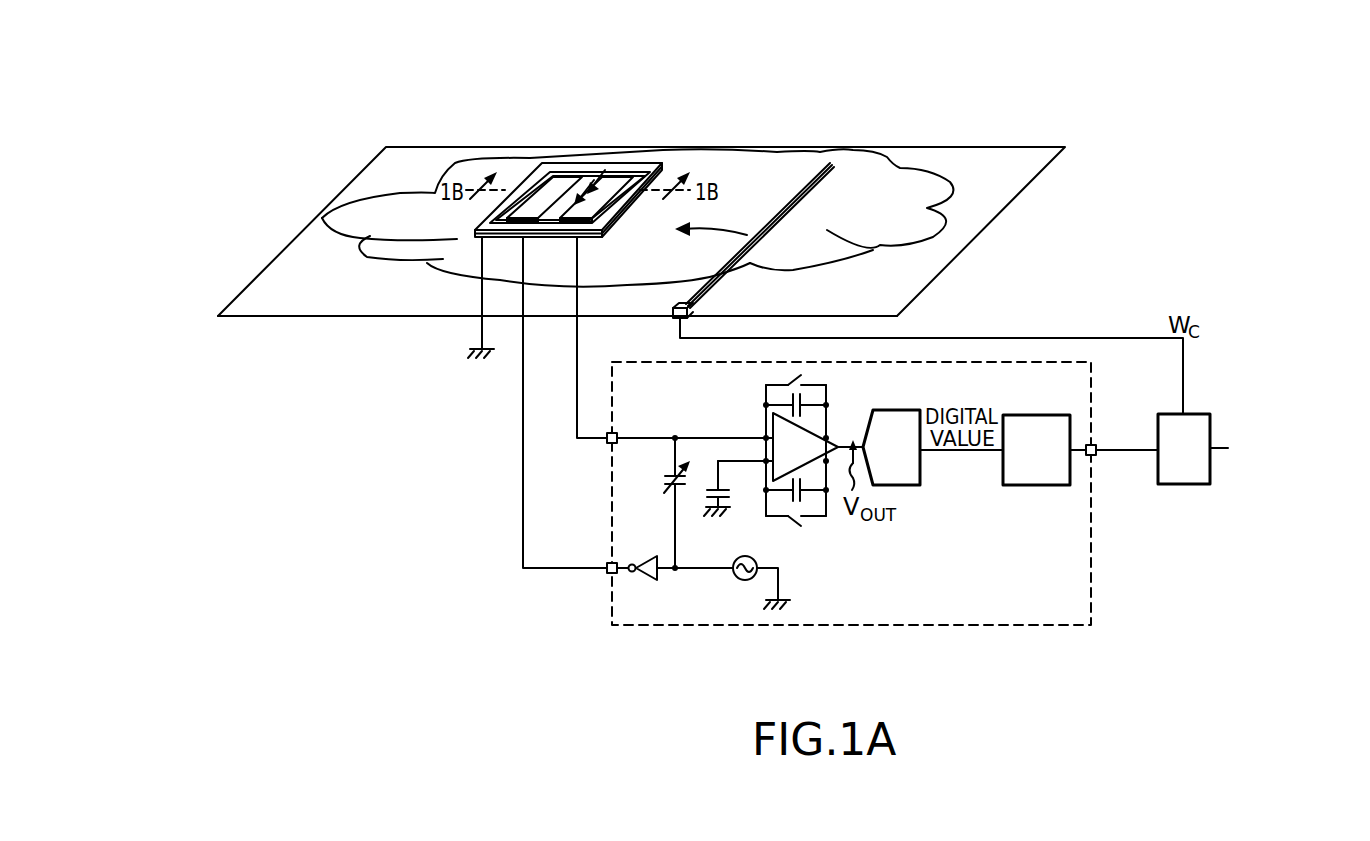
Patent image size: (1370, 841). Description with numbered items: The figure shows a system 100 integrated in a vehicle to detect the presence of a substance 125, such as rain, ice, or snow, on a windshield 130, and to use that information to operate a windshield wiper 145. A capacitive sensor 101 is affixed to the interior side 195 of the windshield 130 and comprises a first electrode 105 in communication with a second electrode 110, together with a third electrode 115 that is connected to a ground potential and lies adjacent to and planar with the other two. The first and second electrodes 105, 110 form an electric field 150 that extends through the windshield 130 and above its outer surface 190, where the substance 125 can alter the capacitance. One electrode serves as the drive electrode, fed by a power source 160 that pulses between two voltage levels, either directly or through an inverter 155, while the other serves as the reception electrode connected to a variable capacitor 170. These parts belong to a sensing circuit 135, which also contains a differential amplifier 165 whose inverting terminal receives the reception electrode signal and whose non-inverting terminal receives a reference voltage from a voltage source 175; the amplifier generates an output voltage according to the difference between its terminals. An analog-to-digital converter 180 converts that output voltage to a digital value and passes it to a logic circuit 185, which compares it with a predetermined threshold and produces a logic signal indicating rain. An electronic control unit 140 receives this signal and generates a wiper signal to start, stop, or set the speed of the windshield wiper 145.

The system 100 is at (346, 72).
The capacitive sensor 101 is at (530, 145).
The first electrode 105 is at (625, 165).
The second electrode 110 is at (575, 190).
The third electrode 115 is at (667, 166).
The substance 125 is at (455, 178).
The windshield 130 is at (1003, 147).
The sensing circuit 135 is at (1092, 558).
The electronic control unit 140 is at (1212, 448).
The windshield wiper 145 is at (705, 296).
The electric field 150 is at (590, 192).
The inverter 155 is at (650, 578).
The power source 160 is at (765, 565).
The differential amplifier 165 is at (818, 410).
The variable capacitor 170 is at (668, 470).
The voltage source 175 is at (728, 500).
The analog-to-digital converter 180 is at (893, 408).
The logic circuit 185 is at (1023, 415).
The outer surface 190 is at (383, 168).
The interior side 195 is at (330, 335).